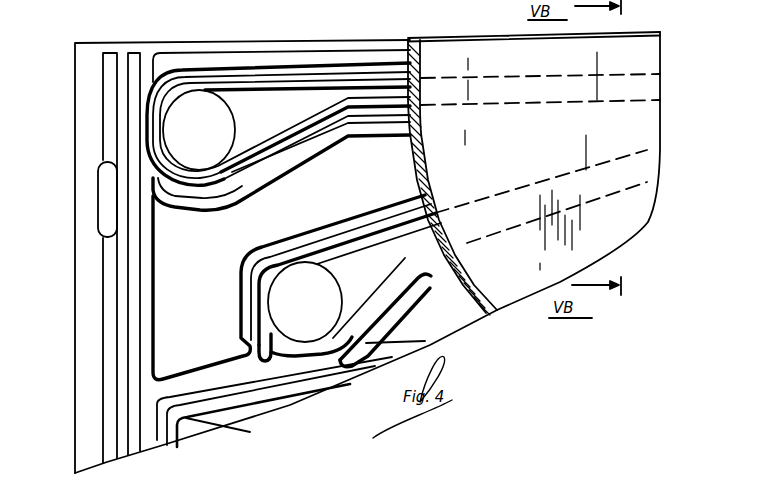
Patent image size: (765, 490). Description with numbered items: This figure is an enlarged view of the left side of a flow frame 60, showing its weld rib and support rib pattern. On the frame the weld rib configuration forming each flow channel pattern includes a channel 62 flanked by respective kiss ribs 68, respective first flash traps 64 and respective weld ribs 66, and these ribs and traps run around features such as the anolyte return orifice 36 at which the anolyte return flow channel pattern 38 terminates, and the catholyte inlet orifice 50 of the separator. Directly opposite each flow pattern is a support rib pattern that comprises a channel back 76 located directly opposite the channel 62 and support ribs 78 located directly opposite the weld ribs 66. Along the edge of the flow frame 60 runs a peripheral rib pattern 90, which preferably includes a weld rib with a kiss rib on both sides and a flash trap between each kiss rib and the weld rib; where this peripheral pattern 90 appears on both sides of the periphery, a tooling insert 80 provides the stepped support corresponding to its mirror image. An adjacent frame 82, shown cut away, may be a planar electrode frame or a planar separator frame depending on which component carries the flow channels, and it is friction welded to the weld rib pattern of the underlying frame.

The anolyte return orifice 36 is at (170, 117).
The anolyte return flow channel pattern 38 is at (238, 213).
The catholyte inlet orifice 50 is at (293, 320).
The flow frame 60 is at (75, 247).
The channel 62 is at (377, 97).
The first flash trap 64 is at (245, 78).
The weld rib 66 is at (295, 72).
The kiss rib 68 is at (208, 86).
The channel back 76 is at (353, 277).
The support rib 78 is at (260, 274).
The tooling insert 80 is at (635, 122).
The adjacent frame 82 is at (438, 151).
The peripheral rib pattern 90 is at (113, 400).